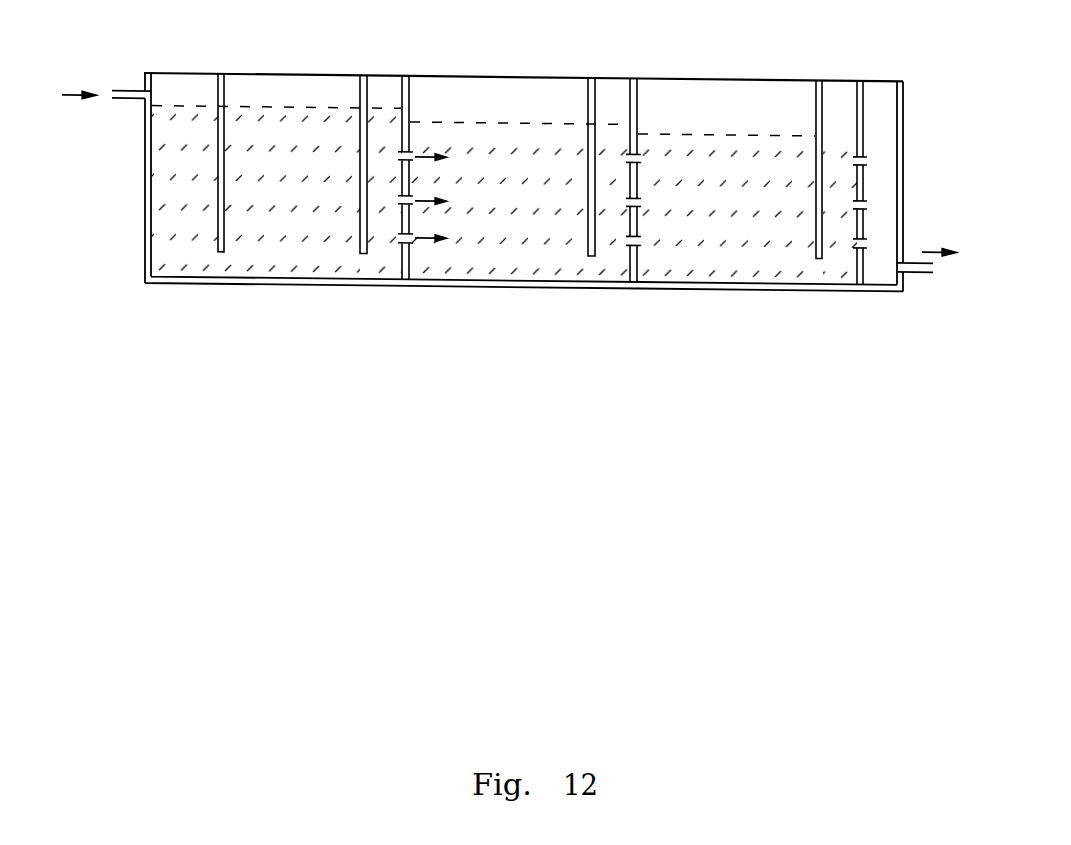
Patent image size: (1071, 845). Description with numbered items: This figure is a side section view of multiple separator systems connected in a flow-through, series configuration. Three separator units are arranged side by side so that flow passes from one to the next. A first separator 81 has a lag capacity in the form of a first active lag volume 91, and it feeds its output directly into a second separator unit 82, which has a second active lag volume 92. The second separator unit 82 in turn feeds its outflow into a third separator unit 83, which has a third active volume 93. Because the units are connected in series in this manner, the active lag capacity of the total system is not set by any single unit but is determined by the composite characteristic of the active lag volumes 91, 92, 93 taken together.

The first separator 81 is at (276, 277).
The second separator unit 82 is at (520, 284).
The third separator unit 83 is at (748, 283).
The first active lag volume 91 is at (282, 133).
The second active lag volume 92 is at (487, 143).
The third active volume 93 is at (703, 153).